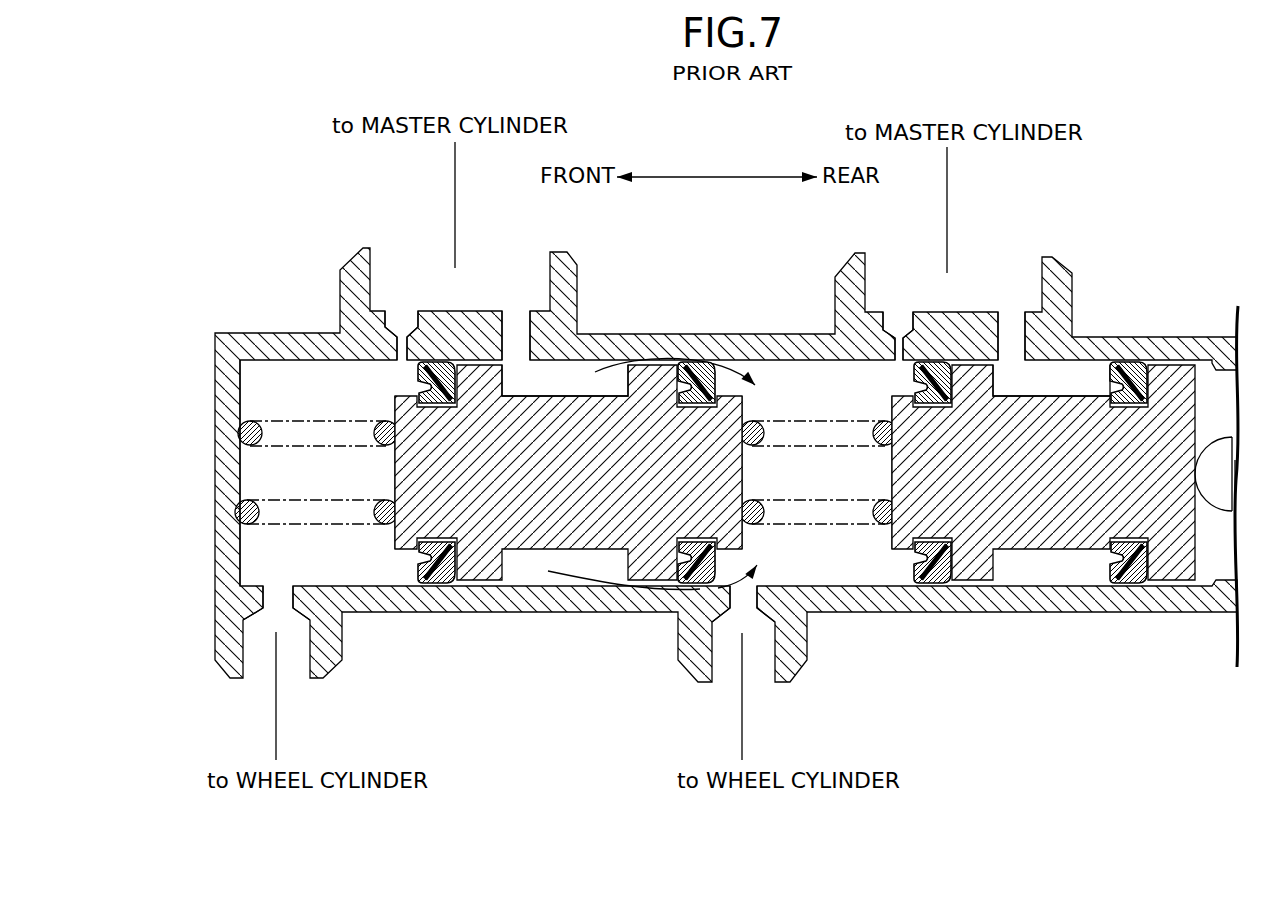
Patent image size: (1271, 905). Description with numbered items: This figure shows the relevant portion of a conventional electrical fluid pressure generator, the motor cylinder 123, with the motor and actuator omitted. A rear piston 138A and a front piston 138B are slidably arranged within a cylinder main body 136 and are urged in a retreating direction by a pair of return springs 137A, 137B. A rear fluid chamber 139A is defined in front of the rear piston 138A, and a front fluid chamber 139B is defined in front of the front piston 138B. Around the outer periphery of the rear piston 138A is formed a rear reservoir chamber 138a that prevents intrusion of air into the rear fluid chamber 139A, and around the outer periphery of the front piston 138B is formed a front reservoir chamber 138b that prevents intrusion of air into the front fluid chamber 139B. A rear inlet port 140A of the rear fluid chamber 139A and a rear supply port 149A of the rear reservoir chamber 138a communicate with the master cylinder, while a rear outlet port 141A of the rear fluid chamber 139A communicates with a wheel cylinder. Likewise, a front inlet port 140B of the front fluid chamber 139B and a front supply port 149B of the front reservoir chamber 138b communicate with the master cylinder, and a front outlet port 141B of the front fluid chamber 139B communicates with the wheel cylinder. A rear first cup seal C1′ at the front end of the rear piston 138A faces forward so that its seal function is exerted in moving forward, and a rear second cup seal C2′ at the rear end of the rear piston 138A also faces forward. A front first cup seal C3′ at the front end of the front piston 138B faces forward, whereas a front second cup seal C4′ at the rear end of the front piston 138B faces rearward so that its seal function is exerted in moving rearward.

The motor cylinder 123 is at (677, 286).
The cylinder main body 136 is at (698, 340).
The return spring 137A is at (756, 424).
The return spring 137B is at (250, 422).
The rear piston 138A is at (1072, 492).
The front piston 138B is at (588, 486).
The rear reservoir chamber 138a is at (1078, 391).
The front reservoir chamber 138b is at (580, 389).
The rear fluid chamber 139A is at (847, 486).
The front fluid chamber 139B is at (342, 484).
The rear inlet port 140A is at (893, 322).
The front inlet port 140B is at (400, 320).
The rear supply port 149A is at (1007, 328).
The front supply port 149B is at (512, 320).
The rear outlet port 141A is at (740, 593).
The front outlet port 141B is at (277, 597).
The rear first cup seal C1′ is at (933, 587).
The rear second cup seal C2′ is at (1127, 587).
The front first cup seal C3′ is at (440, 587).
The front second cup seal C4′ is at (687, 578).